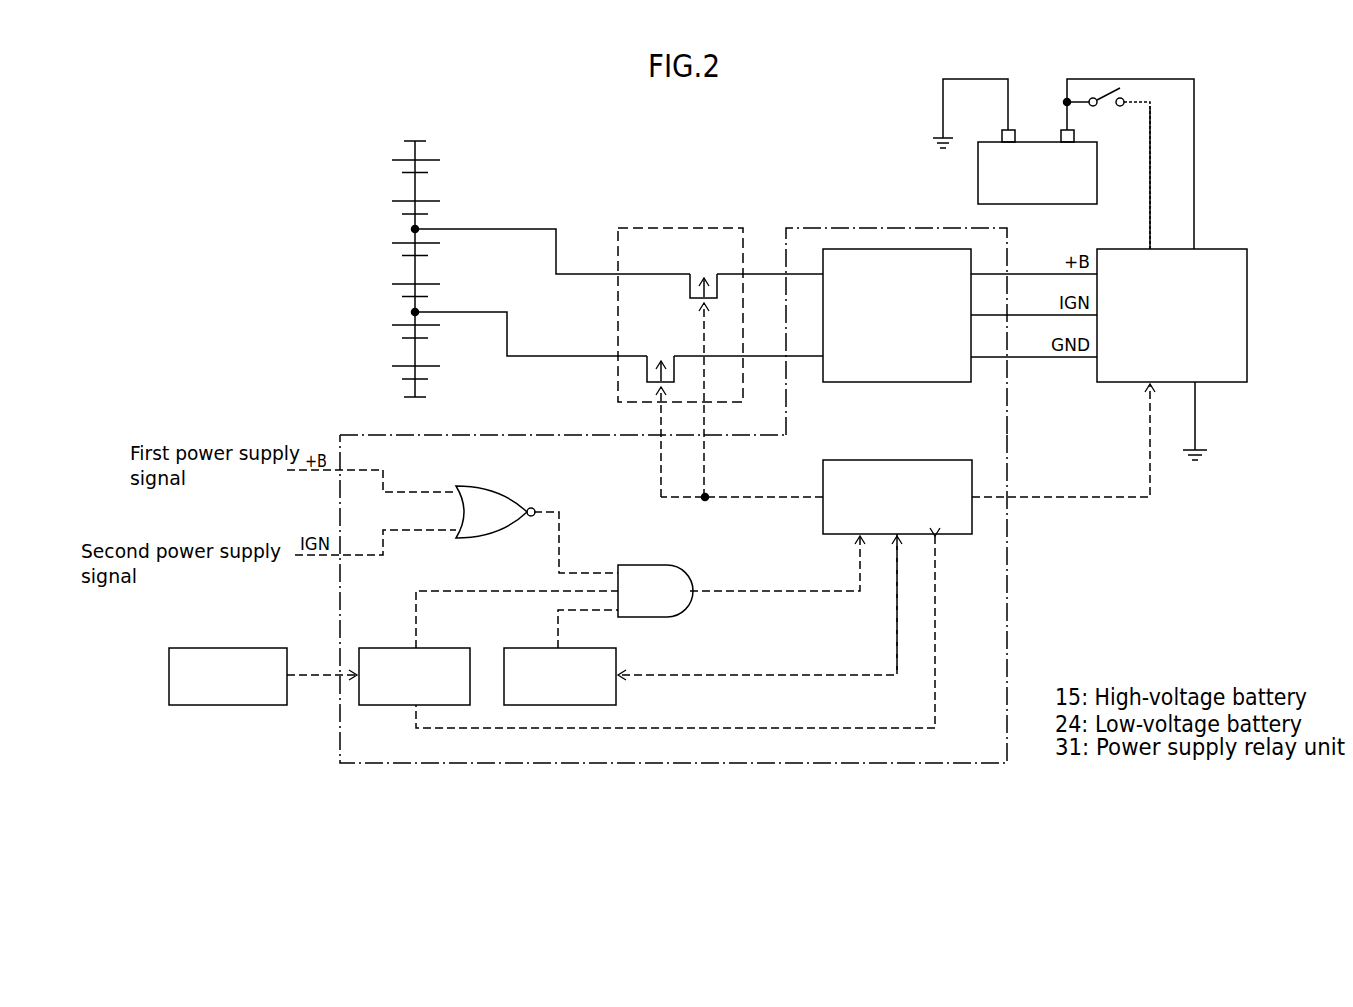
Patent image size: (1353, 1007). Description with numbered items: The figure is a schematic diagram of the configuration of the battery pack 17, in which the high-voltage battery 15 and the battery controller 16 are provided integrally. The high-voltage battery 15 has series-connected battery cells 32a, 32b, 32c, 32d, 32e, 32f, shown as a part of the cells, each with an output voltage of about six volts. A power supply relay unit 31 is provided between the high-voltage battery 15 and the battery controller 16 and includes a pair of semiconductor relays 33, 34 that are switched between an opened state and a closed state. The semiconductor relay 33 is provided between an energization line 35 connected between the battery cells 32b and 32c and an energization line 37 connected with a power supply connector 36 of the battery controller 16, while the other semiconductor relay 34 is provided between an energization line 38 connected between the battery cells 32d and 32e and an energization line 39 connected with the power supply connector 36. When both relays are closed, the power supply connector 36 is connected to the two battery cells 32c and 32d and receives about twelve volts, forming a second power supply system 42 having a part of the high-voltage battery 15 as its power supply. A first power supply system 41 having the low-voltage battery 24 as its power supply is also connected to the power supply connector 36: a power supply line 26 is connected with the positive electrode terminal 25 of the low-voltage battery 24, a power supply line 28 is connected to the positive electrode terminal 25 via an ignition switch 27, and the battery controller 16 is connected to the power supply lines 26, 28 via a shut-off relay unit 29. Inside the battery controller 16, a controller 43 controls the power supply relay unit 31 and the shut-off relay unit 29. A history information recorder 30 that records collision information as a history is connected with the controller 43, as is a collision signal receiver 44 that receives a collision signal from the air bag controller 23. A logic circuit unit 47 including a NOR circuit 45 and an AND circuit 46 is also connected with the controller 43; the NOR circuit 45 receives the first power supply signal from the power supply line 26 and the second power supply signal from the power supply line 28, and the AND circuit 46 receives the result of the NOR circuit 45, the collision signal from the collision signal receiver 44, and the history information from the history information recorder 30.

The high-voltage battery 15 is at (268, 260).
The battery controller 16 is at (1007, 598).
The battery pack 17 is at (224, 145).
The air bag controller 23 is at (255, 647).
The low-voltage battery 24 is at (978, 172).
The positive electrode terminal 25 is at (1058, 136).
The power supply line 26 is at (1175, 80).
The ignition switch 27 is at (1108, 108).
The power supply line 28 is at (1150, 205).
The shut-off relay unit 29 is at (1215, 248).
The history information recorder 30 is at (527, 647).
The power supply relay unit 31 is at (680, 228).
The battery cell 32a is at (393, 165).
The battery cell 32b is at (393, 206).
The battery cell 32c is at (393, 248).
The battery cell 32d is at (393, 289).
The battery cell 32e is at (393, 330).
The battery cell 32f is at (393, 371).
The semiconductor relay 33 is at (690, 285).
The semiconductor relay 34 is at (647, 372).
The energization line 35 is at (500, 228).
The power supply connector 36 is at (866, 249).
The energization line 37 is at (757, 272).
The energization line 38 is at (541, 355).
The energization line 39 is at (757, 355).
The first power supply system 41 is at (1222, 146).
The second power supply system 42 is at (588, 165).
The controller 43 is at (938, 459).
The collision signal receiver 44 is at (383, 647).
The NOR circuit 45 is at (497, 487).
The AND circuit 46 is at (650, 565).
The logic circuit unit 47 is at (594, 527).